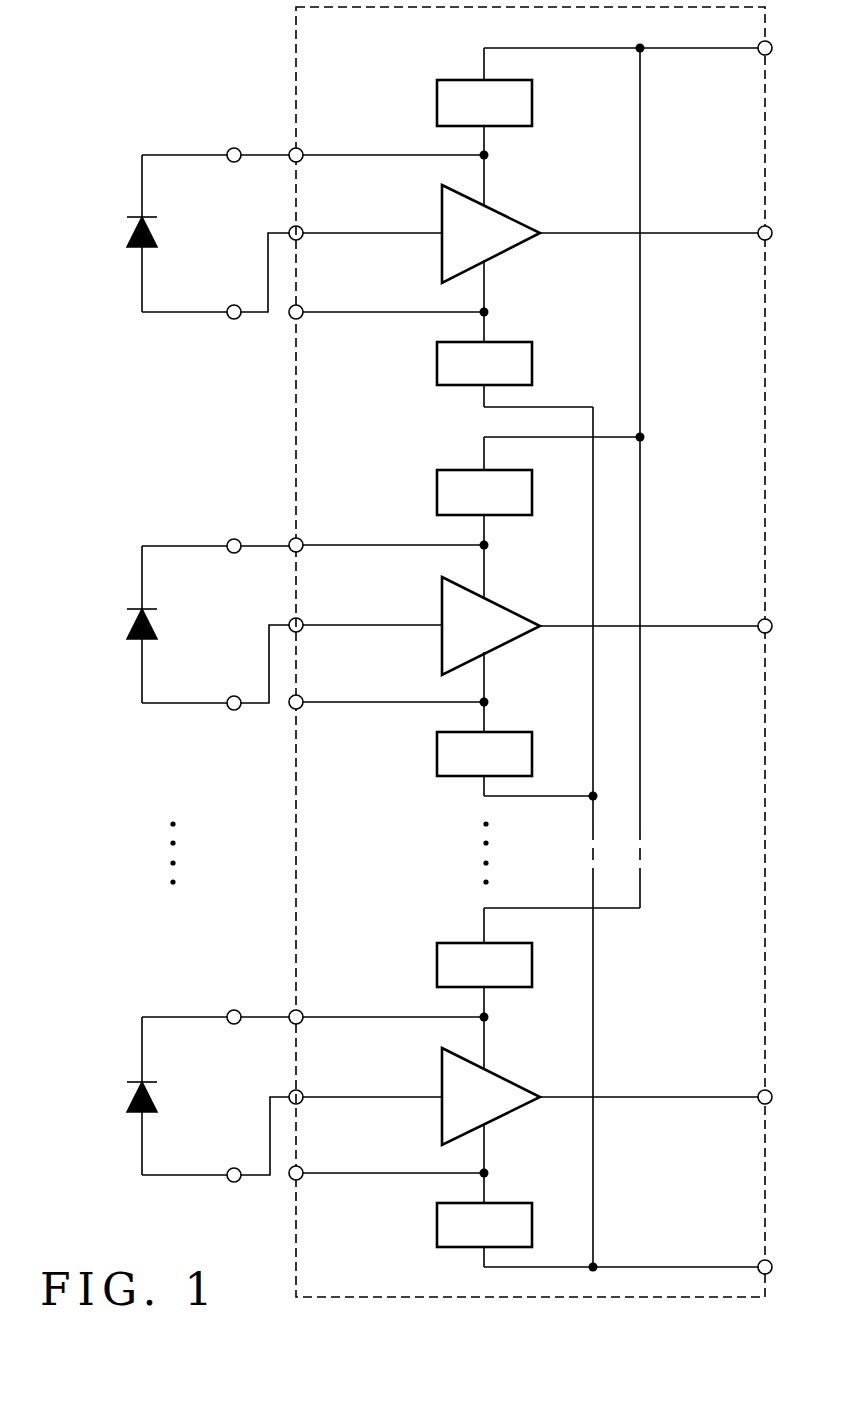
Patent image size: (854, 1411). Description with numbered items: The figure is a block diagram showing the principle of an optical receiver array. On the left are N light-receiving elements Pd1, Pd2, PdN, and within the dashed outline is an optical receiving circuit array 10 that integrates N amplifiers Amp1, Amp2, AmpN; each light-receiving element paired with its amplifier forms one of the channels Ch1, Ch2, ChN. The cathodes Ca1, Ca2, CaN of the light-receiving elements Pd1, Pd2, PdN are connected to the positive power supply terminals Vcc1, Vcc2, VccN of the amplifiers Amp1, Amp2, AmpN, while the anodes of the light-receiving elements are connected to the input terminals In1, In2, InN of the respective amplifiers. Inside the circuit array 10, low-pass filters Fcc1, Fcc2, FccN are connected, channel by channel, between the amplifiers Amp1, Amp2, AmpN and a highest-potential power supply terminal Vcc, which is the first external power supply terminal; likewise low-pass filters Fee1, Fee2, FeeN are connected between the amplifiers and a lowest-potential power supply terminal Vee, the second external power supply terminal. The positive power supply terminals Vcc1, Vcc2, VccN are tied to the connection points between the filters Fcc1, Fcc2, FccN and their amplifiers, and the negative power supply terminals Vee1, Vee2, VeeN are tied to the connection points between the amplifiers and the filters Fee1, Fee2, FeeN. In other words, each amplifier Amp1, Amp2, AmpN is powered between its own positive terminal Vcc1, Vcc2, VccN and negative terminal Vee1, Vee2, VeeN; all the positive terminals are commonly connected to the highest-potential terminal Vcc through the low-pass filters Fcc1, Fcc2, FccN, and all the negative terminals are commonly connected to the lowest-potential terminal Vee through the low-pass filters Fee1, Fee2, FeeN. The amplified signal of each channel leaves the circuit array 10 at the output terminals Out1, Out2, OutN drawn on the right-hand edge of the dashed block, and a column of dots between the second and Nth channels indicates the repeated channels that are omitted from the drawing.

The optical receiving circuit array 10 is at (297, 63).
The channel Ch1 is at (108, 208).
The channel Ch2 is at (108, 548).
The channel ChN is at (108, 985).
The light-receiving element Pd1 is at (157, 215).
The light-receiving element Pd2 is at (157, 607).
The light-receiving element PdN is at (158, 1080).
The cathode Ca1 is at (215, 141).
The cathode Ca2 is at (215, 532).
The cathode CaN is at (215, 1003).
The input terminal In1 is at (317, 259).
The input terminal In2 is at (317, 650).
The input terminal InN is at (316, 1122).
The highest-potential power supply terminal Vcc is at (628, 462).
The lowest-potential power supply terminal Vee is at (628, 840).
The positive power supply terminal Vcc1 is at (389, 141).
The positive power supply terminal Vcc2 is at (389, 531).
The positive power supply terminal VccN is at (389, 1003).
The negative power supply terminal Vee1 is at (389, 298).
The negative power supply terminal Vee2 is at (389, 688).
The negative power supply terminal VeeN is at (389, 1160).
The low-pass filter Fcc1 is at (484, 127).
The low-pass filter Fcc2 is at (484, 517).
The low-pass filter FccN is at (484, 988).
The low-pass filter Fee1 is at (484, 333).
The low-pass filter Fee2 is at (484, 724).
The low-pass filter FeeN is at (484, 1195).
The amplifier Amp1 is at (491, 234).
The amplifier Amp2 is at (491, 626).
The amplifier AmpN is at (491, 1096).
The output terminal 1 Out1 is at (656, 220).
The output terminal 2 Out2 is at (656, 612).
The output terminal N OutN is at (656, 1082).